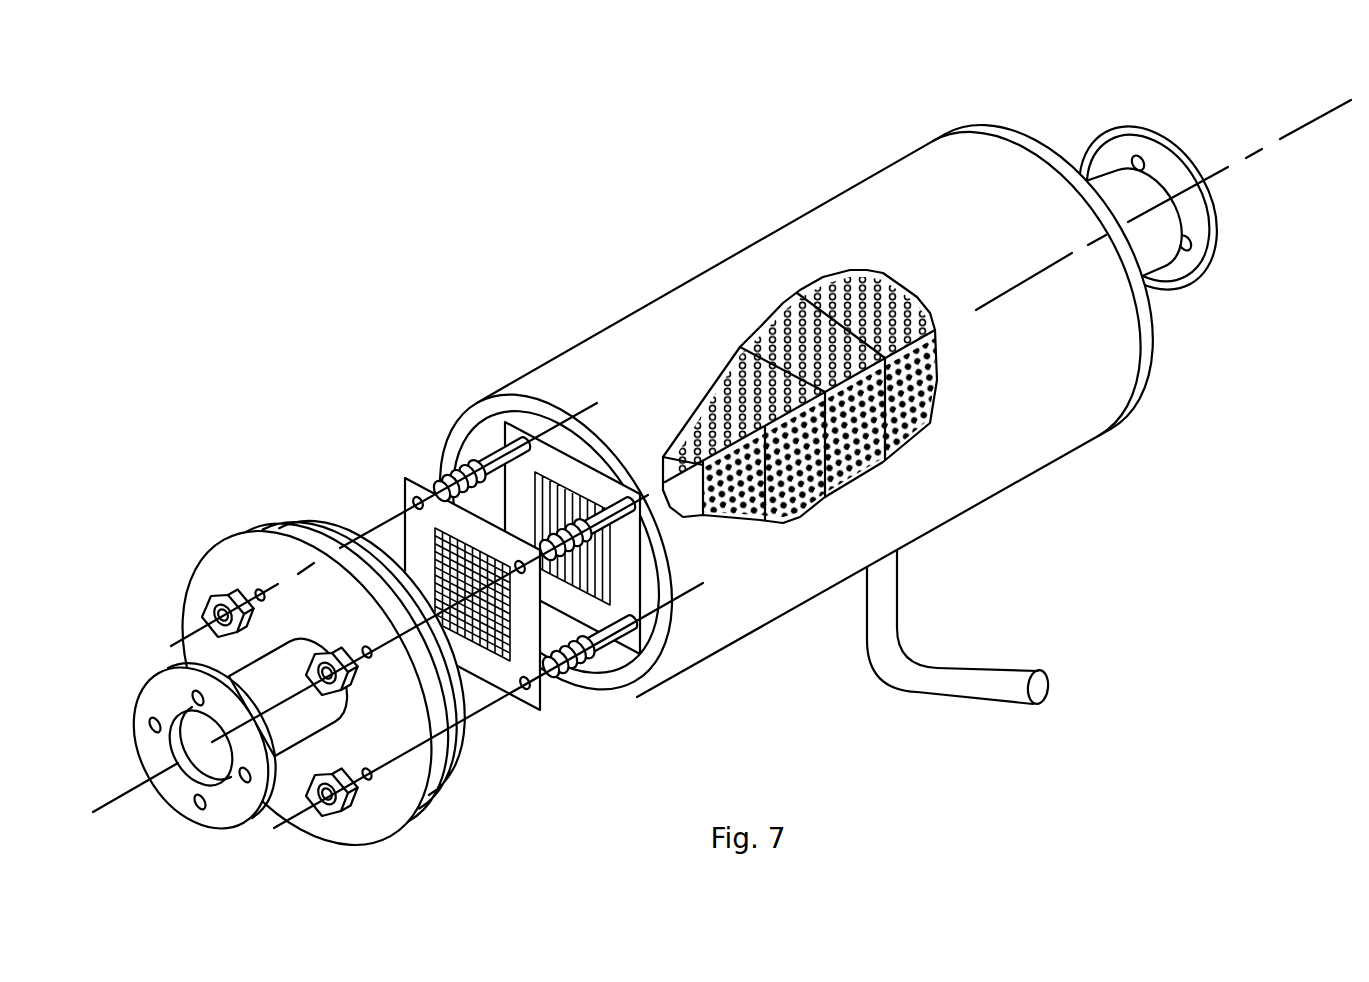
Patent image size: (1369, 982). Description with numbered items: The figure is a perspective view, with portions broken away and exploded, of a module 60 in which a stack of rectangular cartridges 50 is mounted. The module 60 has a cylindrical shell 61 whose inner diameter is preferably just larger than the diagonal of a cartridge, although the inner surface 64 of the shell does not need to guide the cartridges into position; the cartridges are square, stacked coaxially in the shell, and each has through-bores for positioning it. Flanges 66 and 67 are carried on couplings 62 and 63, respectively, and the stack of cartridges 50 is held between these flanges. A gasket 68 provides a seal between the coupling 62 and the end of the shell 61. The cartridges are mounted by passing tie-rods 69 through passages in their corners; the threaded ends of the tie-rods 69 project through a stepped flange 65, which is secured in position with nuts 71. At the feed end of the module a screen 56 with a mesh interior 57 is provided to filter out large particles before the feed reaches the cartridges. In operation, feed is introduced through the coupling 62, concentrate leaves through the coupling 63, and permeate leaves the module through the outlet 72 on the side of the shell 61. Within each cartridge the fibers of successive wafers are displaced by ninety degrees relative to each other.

The rectangular cartridges 50 is at (498, 550).
The screen 56 is at (398, 538).
The mesh interior 57 is at (382, 530).
The module 60 is at (871, 428).
The cylindrical shell 61 is at (1058, 425).
The coupling 62 is at (331, 651).
The coupling 63 is at (1044, 87).
The inner surface 64 is at (482, 428).
The stepped flange 65 is at (256, 522).
The flange 66 is at (152, 680).
The flange 67 is at (1157, 155).
The gasket 68 is at (478, 748).
The tie-rods 69 is at (462, 437).
The nuts 71 is at (374, 801).
The outlet 72 is at (987, 687).